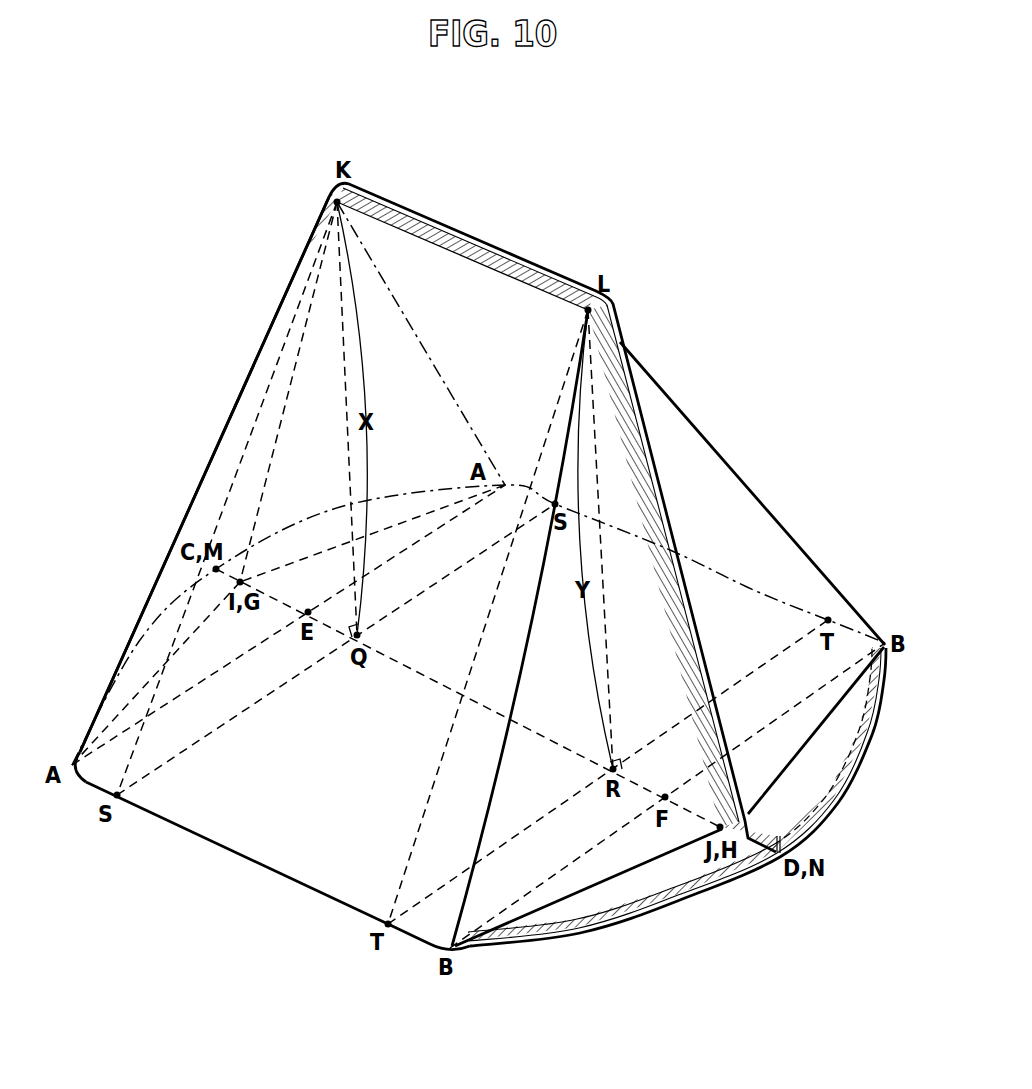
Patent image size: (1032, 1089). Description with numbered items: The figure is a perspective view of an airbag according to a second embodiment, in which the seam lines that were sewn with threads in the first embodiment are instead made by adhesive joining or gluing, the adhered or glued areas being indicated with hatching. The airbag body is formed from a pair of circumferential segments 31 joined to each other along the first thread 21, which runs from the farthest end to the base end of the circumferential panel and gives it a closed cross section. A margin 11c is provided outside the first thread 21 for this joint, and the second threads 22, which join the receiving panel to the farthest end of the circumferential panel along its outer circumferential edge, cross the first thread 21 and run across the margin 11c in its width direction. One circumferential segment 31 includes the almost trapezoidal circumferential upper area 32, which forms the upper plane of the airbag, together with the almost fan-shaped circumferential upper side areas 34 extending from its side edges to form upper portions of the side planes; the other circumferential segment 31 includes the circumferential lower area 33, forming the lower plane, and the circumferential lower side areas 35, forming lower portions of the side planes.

The margin 11c is at (637, 400).
The first thread 21 is at (508, 258).
The second threads 22 is at (633, 918).
The circumferential segments 31 is at (491, 621).
The circumferential upper area 32 is at (245, 490).
The circumferential lower area 33 is at (687, 450).
The circumferential upper side areas 34 is at (505, 786).
The circumferential lower side areas 35 is at (770, 548).